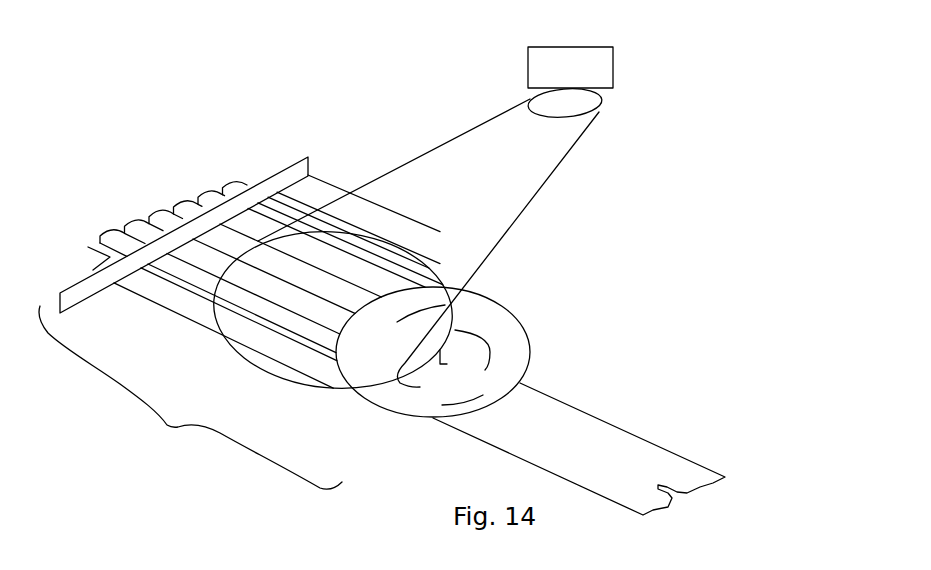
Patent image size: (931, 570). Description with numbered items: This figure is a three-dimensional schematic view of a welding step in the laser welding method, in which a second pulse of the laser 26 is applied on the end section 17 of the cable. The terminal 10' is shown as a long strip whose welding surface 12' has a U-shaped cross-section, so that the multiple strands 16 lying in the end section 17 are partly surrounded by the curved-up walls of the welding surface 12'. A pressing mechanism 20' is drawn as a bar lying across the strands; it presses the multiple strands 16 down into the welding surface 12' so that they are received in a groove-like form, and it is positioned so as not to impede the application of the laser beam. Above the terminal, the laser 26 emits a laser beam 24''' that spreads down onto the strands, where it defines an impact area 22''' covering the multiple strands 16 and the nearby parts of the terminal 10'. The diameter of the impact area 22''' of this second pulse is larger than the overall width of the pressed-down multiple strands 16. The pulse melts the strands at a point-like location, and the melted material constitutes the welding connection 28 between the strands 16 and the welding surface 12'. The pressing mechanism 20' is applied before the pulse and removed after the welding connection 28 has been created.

The terminal 10' is at (579, 401).
The welding surface 12' is at (273, 243).
The multiple strands 16 is at (303, 215).
The end section 17 is at (190, 397).
The pressing mechanism 20' is at (184, 200).
The impact area 22''' is at (498, 249).
The laser beam 24''' is at (394, 145).
The laser 26 is at (527, 72).
The welding connection 28 is at (523, 325).